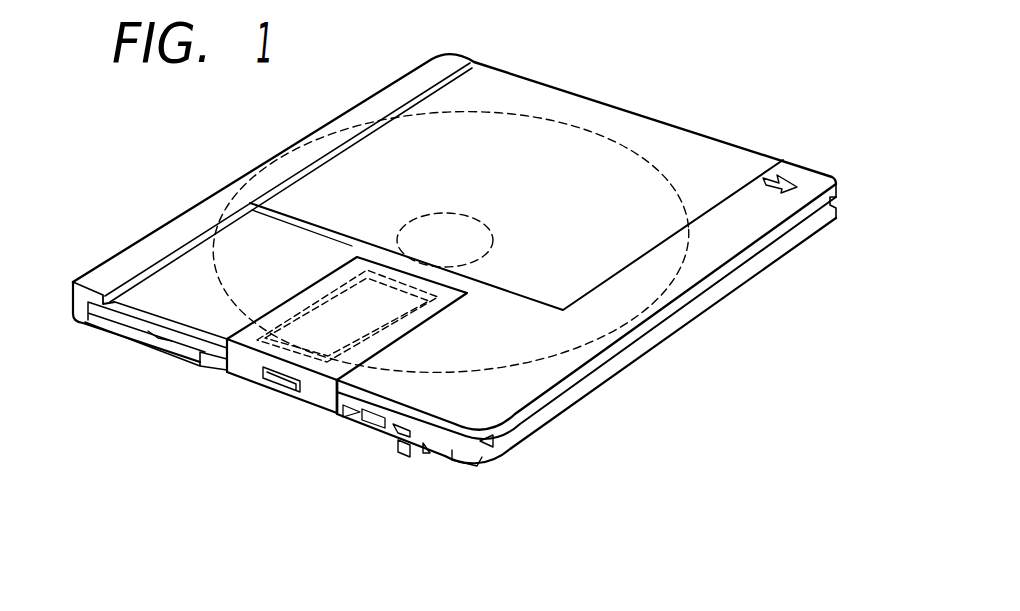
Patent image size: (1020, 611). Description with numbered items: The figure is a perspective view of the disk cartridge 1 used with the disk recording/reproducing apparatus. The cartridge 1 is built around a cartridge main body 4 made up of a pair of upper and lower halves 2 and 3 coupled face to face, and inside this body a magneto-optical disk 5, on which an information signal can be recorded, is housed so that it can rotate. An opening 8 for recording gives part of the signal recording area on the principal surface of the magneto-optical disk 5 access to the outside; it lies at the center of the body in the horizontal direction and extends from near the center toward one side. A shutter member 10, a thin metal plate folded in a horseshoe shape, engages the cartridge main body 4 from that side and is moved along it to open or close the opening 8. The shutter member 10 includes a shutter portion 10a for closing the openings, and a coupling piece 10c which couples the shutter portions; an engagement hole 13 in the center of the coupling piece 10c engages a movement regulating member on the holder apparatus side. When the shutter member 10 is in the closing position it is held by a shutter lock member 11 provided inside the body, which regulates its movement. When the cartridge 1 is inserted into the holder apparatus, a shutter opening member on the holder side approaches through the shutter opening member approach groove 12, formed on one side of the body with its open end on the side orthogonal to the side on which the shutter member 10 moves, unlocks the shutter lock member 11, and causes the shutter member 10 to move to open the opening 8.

The cartridge 1 is at (621, 66).
The upper half 2 is at (797, 213).
The lower half 3 is at (800, 233).
The cartridge main body 4 is at (878, 235).
The magneto-optical disk 5 is at (527, 143).
The opening for recording 8 is at (330, 307).
The shutter member 10 is at (318, 400).
The shutter member 10a is at (360, 263).
The coupling piece 10c is at (237, 372).
The shutter lock member 11 is at (400, 433).
The shutter opening member approach groove 12 is at (468, 444).
The engagement hole 13 is at (267, 383).